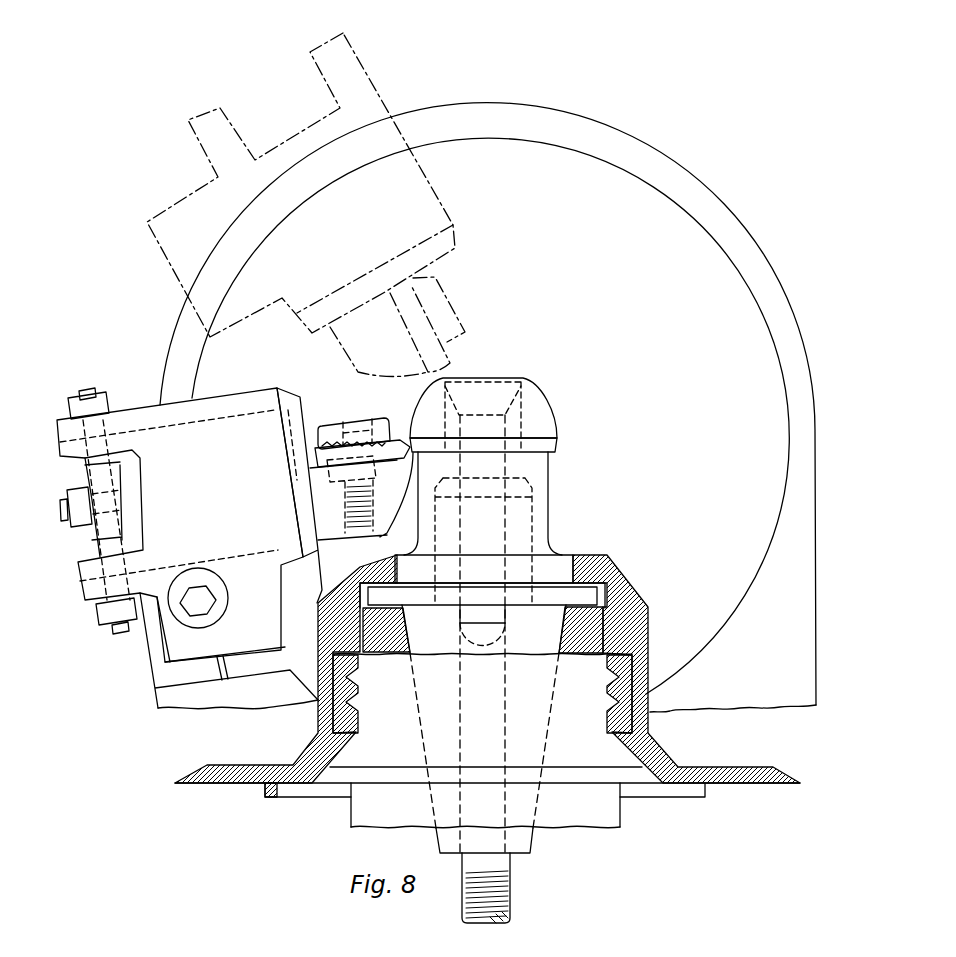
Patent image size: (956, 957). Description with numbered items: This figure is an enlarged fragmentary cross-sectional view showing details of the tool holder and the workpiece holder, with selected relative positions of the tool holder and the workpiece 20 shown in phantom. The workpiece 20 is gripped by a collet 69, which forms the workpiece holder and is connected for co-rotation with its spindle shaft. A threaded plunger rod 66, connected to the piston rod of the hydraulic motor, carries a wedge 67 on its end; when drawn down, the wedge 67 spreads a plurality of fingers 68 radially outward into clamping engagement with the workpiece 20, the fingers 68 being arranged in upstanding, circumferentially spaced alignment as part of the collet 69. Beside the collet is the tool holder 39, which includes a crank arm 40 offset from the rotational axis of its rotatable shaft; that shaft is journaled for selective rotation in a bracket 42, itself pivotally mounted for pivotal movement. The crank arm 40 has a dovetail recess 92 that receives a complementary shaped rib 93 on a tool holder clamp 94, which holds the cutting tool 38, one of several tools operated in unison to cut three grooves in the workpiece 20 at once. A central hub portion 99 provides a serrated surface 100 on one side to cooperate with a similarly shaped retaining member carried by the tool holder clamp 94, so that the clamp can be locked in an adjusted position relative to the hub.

The workpiece 20 is at (548, 436).
The cutting tool 38 is at (450, 366).
The tool holder 39 is at (715, 638).
The bracket 42 is at (683, 180).
The crank arm 40 is at (152, 676).
The threaded plunger rod 66 is at (510, 890).
The wedge 67 is at (524, 381).
The fingers 68 is at (518, 404).
The collet 69 is at (550, 506).
The dovetail recess 92 is at (246, 661).
The rib 93 is at (252, 392).
The tool holder clamp 94 is at (370, 418).
The central hub portion 99 is at (313, 481).
The serrated surface 100 is at (322, 426).